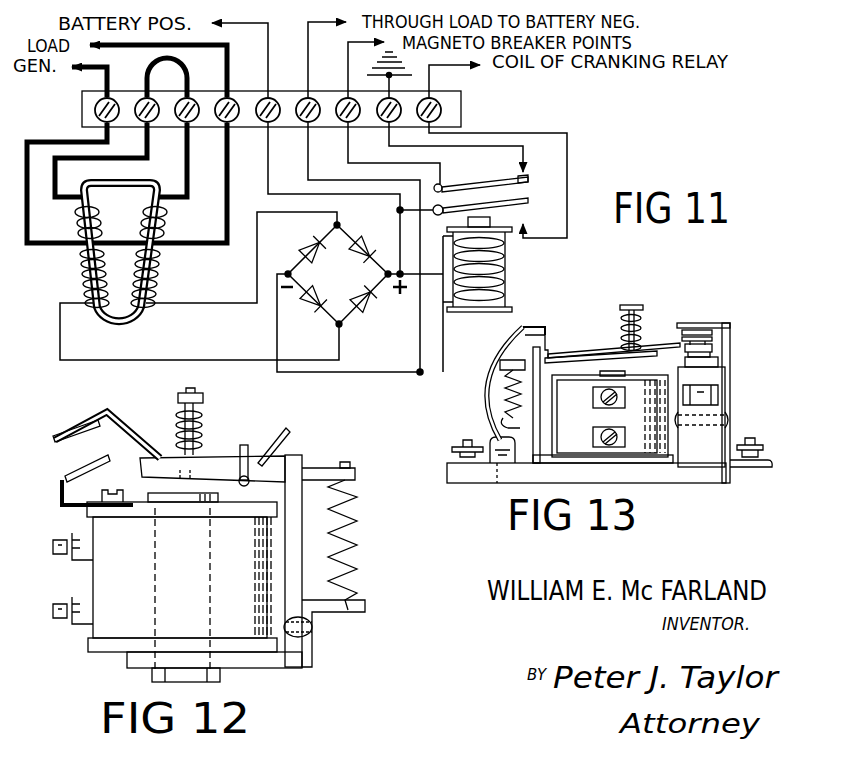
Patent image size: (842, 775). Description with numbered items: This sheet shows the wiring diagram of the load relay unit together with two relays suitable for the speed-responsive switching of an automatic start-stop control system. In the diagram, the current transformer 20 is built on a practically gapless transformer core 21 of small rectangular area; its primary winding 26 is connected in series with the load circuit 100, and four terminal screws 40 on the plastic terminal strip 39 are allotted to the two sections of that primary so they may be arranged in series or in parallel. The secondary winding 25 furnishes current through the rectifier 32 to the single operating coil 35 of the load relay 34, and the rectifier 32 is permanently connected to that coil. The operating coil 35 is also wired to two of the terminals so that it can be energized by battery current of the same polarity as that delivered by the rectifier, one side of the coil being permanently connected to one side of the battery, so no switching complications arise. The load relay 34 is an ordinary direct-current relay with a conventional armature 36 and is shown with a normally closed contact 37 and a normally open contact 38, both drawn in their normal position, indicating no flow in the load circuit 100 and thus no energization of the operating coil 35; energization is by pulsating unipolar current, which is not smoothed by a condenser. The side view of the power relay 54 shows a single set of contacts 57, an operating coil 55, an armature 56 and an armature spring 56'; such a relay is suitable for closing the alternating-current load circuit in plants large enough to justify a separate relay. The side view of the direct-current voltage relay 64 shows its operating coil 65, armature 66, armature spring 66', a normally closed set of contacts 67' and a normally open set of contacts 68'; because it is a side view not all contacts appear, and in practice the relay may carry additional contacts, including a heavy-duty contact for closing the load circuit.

In FIG. 11, the load circuit 100 is at (155, 47).
In FIG. 11, the terminal screws 40 is at (222, 100).
In FIG. 11, the terminal strip 39 is at (461, 109).
In FIG. 11, the current transformer 20 is at (111, 252).
In FIG. 11, the transformer core 21 is at (121, 187).
In FIG. 11, the primary winding 26 is at (166, 217).
In FIG. 11, the secondary winding 25 is at (158, 276).
In FIG. 11, the rectifier 32 is at (383, 291).
In FIG. 11, the load relay 34 is at (504, 264).
In FIG. 11, the operating coil 35 is at (495, 266).
In FIG. 11, the armature 36 is at (497, 200).
In FIG. 11, the normally closed contact 37 is at (534, 172).
In FIG. 11, the normally open contact 38 is at (534, 204).
In FIG. 12, the power relay 54 is at (330, 626).
In FIG. 12, the operating coil 55 is at (128, 617).
In FIG. 12, the armature 56 is at (247, 437).
In FIG. 12, the armature spring 56' is at (368, 545).
In FIG. 12, the contacts 57 is at (68, 445).
In FIG. 13, the voltage relay 64 is at (740, 394).
In FIG. 13, the operating coil 65 is at (635, 440).
In FIG. 13, the armature 66 is at (609, 326).
In FIG. 13, the armature spring 66' is at (496, 383).
In FIG. 13, the normally closed set of contacts 67' is at (729, 332).
In FIG. 13, the normally open set of contacts 68' is at (732, 355).